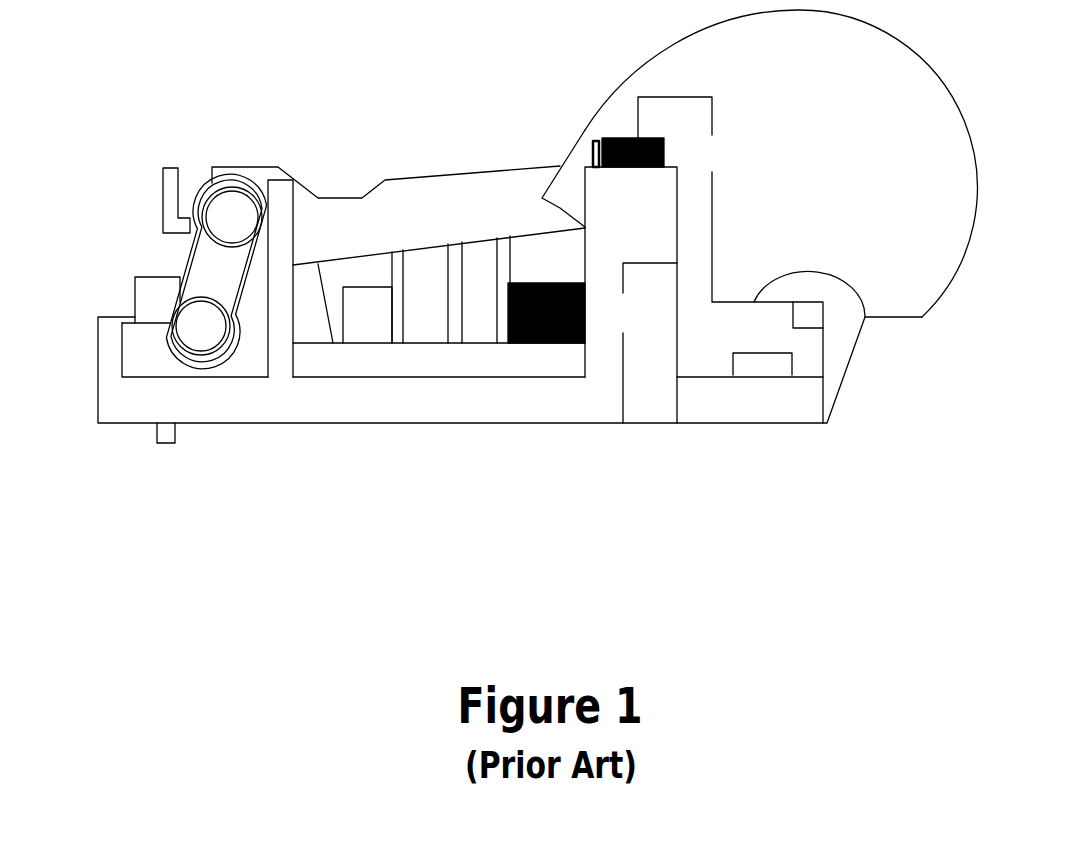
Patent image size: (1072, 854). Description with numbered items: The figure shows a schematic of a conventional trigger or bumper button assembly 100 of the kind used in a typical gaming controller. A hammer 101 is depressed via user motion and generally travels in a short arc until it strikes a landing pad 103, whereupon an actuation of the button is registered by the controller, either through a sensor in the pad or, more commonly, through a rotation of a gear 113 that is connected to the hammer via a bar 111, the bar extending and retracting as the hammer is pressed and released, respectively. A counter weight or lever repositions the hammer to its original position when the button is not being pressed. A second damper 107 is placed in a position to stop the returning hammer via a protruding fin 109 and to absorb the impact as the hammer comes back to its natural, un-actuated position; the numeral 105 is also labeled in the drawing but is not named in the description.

The trigger or bumper button assembly 100 is at (572, 585).
The hammer 101 is at (975, 128).
The landing pad 103 is at (588, 313).
The lid connection 105 is at (560, 208).
The second damper 107 is at (666, 150).
The protruding fin 109 is at (592, 150).
The bar 111 is at (440, 210).
The gear 113 is at (205, 267).